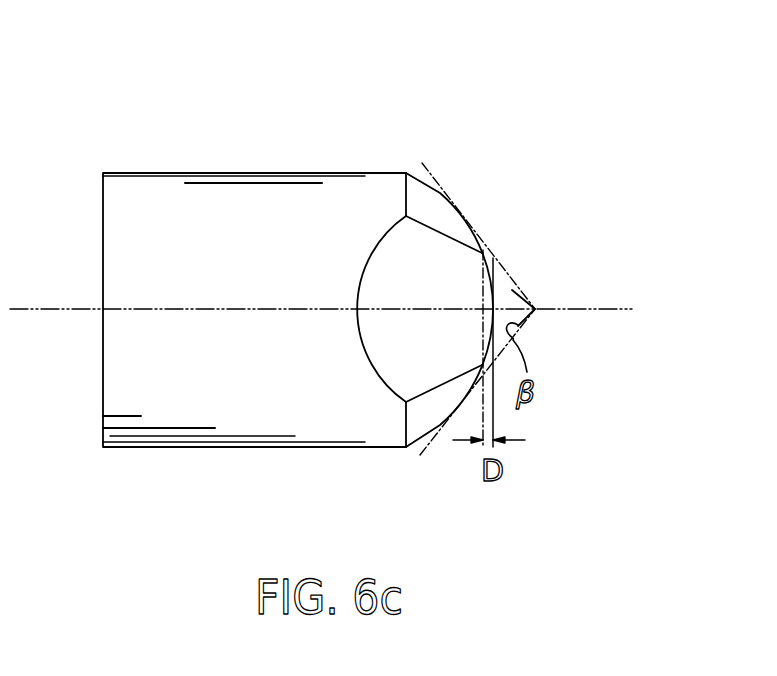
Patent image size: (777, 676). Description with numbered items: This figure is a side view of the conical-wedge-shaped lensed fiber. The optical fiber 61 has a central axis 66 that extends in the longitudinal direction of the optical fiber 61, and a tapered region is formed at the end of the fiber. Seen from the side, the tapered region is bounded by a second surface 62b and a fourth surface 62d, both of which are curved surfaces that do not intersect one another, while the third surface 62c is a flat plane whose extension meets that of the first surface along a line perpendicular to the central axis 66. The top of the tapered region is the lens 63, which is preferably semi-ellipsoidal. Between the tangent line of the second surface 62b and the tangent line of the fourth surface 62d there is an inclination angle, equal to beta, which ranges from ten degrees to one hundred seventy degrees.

The optical fiber 61 is at (252, 191).
The second surface 62b is at (433, 223).
The third surface 62c is at (461, 280).
The fourth surface 62d is at (422, 408).
The lens 63 is at (461, 281).
The central axis 66 is at (48, 312).